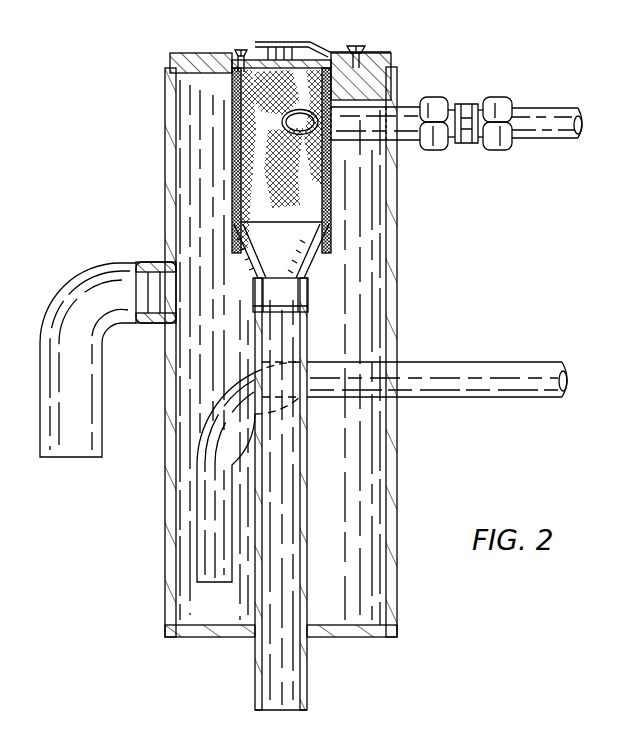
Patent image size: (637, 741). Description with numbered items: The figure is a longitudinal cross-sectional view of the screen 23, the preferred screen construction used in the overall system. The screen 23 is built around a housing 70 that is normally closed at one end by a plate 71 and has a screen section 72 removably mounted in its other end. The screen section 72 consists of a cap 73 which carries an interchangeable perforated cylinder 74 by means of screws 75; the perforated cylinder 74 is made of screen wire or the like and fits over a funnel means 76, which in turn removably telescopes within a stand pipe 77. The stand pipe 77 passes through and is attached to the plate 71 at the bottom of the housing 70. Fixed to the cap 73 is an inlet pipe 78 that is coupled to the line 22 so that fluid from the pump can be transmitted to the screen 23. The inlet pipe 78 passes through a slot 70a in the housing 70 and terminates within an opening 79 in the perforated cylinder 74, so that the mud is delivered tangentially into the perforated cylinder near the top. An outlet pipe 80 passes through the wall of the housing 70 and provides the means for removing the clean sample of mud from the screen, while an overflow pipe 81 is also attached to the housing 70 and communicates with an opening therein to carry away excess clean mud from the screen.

The line 22 is at (538, 110).
The screen 23 is at (474, 254).
The housing 70 is at (398, 250).
The slot 70a is at (398, 95).
The plate 71 is at (350, 637).
The screen section 72 is at (214, 48).
The cap 73 is at (366, 50).
The perforated cylinder 74 is at (231, 146).
The screws 75 is at (241, 50).
The funnel means 76 is at (311, 252).
The stand pipe 77 is at (308, 478).
The inlet pipe 78 is at (399, 110).
The opening 79 is at (282, 122).
The outlet pipe 80 is at (475, 374).
The overflow pipe 81 is at (120, 272).